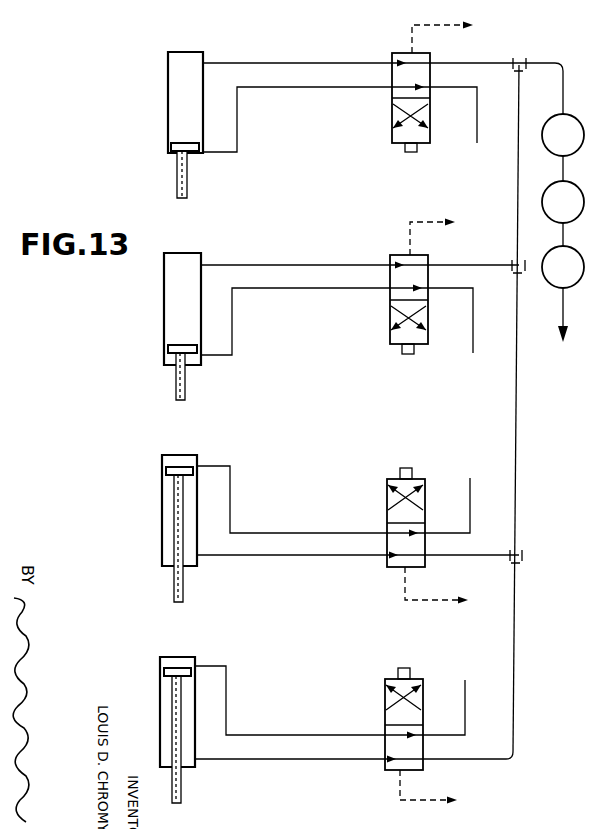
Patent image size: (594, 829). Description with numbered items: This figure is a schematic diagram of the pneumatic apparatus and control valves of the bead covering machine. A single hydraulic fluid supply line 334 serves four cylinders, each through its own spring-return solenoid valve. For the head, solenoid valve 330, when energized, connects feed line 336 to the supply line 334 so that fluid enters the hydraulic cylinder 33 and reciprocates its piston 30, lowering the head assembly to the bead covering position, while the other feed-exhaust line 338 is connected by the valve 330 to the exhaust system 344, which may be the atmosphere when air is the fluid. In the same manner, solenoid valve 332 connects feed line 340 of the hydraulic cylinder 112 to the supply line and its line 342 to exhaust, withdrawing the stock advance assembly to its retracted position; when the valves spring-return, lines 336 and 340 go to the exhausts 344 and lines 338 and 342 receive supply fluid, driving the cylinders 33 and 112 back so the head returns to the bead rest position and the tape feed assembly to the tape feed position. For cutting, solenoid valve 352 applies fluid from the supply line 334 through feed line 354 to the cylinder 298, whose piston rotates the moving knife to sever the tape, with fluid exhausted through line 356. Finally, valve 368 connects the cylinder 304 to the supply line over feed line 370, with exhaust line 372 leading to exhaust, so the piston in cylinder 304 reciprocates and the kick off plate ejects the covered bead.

The hydraulic cylinder 33 is at (168, 120).
The piston 30 is at (168, 148).
The feed-exhaust line 338 is at (258, 63).
The feed line 336 is at (341, 88).
The solenoid valve 330 is at (392, 143).
The exhaust system 344 is at (477, 142).
The hydraulic cylinder 112 is at (164, 308).
The feed-exhaust line 342 is at (318, 265).
The feed line 340 is at (352, 289).
The solenoid valve 332 is at (390, 344).
The cylinder 298 is at (162, 520).
The feed line 354 is at (318, 533).
The exhaust line 356 is at (333, 555).
The solenoid valve 352 is at (400, 472).
The cylinder 304 is at (160, 722).
The feed line 370 is at (331, 735).
The exhaust line 372 is at (319, 759).
The solenoid valve 368 is at (416, 679).
The hydraulic fluid supply line 334 is at (519, 436).